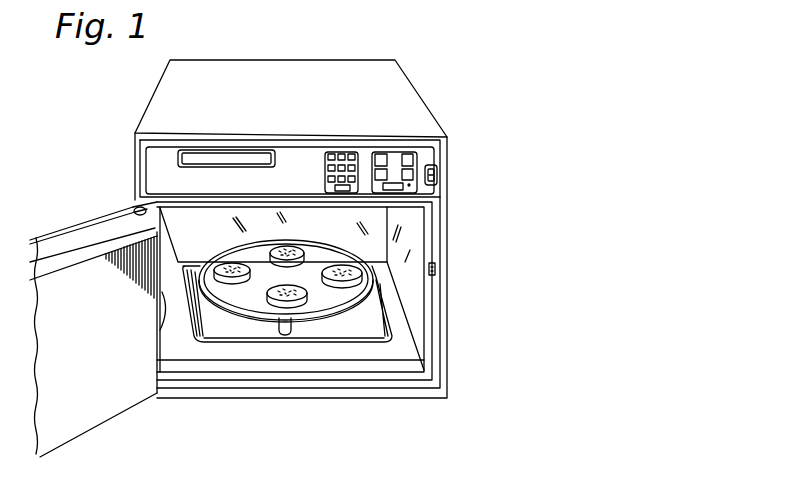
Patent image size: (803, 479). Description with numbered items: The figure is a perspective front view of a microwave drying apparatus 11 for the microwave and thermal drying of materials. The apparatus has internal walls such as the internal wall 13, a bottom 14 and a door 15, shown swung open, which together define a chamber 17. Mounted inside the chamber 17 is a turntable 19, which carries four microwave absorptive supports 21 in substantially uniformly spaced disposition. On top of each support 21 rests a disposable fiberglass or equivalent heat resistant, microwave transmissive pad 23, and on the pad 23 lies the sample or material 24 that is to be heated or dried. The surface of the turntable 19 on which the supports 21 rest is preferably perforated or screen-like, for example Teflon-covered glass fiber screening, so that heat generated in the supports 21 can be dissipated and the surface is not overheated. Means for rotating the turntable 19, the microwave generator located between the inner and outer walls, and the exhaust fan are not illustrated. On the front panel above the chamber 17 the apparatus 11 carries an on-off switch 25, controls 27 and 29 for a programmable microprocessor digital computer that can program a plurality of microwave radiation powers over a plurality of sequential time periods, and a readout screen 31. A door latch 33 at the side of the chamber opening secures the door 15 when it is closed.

The microwave drying apparatus 11 is at (452, 266).
The internal wall 13 is at (175, 270).
The bottom 14 is at (360, 334).
The door 15 is at (92, 418).
The chamber 17 is at (410, 231).
The turntable 19 is at (374, 279).
The microwave absorptive support 21 is at (285, 309).
The microwave transmissive pad 23 is at (302, 303).
The sample or material 24 is at (262, 296).
The on-off switch 25 is at (438, 172).
The control 27 is at (339, 150).
The control 29 is at (392, 155).
The readout screen 31 is at (212, 151).
The door latch 33 is at (436, 273).